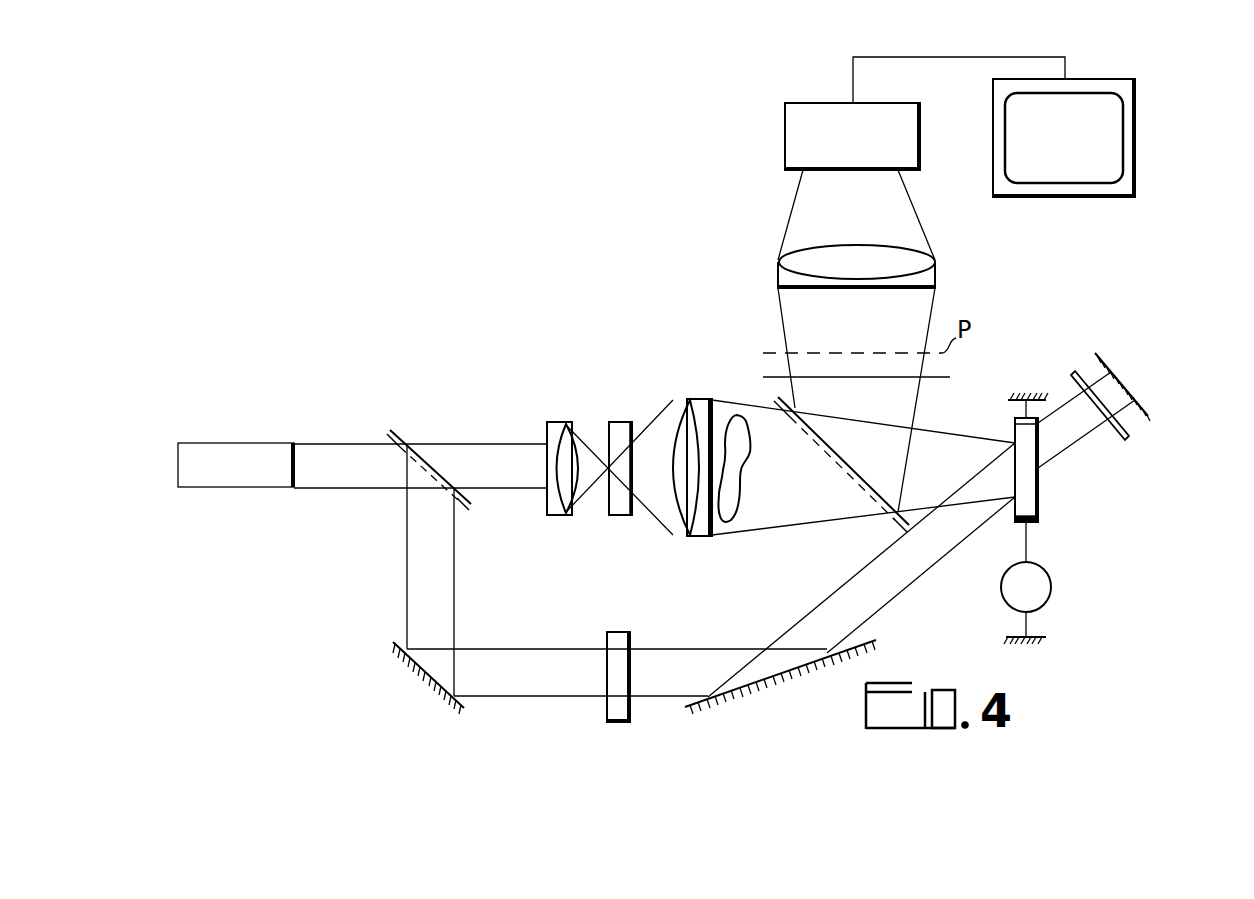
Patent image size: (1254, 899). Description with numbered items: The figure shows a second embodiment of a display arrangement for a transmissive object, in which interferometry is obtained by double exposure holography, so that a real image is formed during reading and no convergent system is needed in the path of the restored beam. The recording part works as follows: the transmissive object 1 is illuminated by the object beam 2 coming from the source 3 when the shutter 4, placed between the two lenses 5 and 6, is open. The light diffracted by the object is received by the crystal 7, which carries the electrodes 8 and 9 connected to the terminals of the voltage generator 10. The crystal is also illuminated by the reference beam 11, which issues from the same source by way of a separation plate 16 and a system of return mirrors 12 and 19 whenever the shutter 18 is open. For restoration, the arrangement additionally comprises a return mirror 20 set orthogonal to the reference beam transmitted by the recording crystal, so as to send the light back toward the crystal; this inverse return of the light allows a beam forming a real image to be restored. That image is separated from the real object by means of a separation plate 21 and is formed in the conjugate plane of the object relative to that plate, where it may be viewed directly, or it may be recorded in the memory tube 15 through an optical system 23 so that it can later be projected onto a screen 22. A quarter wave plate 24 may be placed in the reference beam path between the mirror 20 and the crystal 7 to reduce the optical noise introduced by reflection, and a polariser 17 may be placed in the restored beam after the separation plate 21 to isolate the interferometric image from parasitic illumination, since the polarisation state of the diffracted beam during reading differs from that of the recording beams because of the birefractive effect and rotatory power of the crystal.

The transmissive object 1 is at (737, 415).
The object beam 2 is at (775, 531).
The source 3 is at (234, 510).
The shutter 4 is at (611, 422).
The lens 5 is at (548, 422).
The lens 6 is at (703, 537).
The crystal 7 is at (1038, 504).
The electrode 8 is at (1038, 523).
The electrode 9 is at (1015, 421).
The voltage generator 10 is at (1051, 591).
The reference beam 11 is at (406, 584).
The return mirror 12 is at (454, 711).
The memory tube 15 is at (785, 136).
The separation plate 16 is at (403, 444).
The polariser 17 is at (949, 377).
The shutter 18 is at (620, 724).
The return mirror 19 is at (744, 692).
The return mirror 20 is at (1176, 424).
The separation plate 21 is at (903, 523).
The screen 22 is at (1135, 148).
The optical system 23 is at (778, 278).
The quarter wave plate 24 is at (1127, 440).